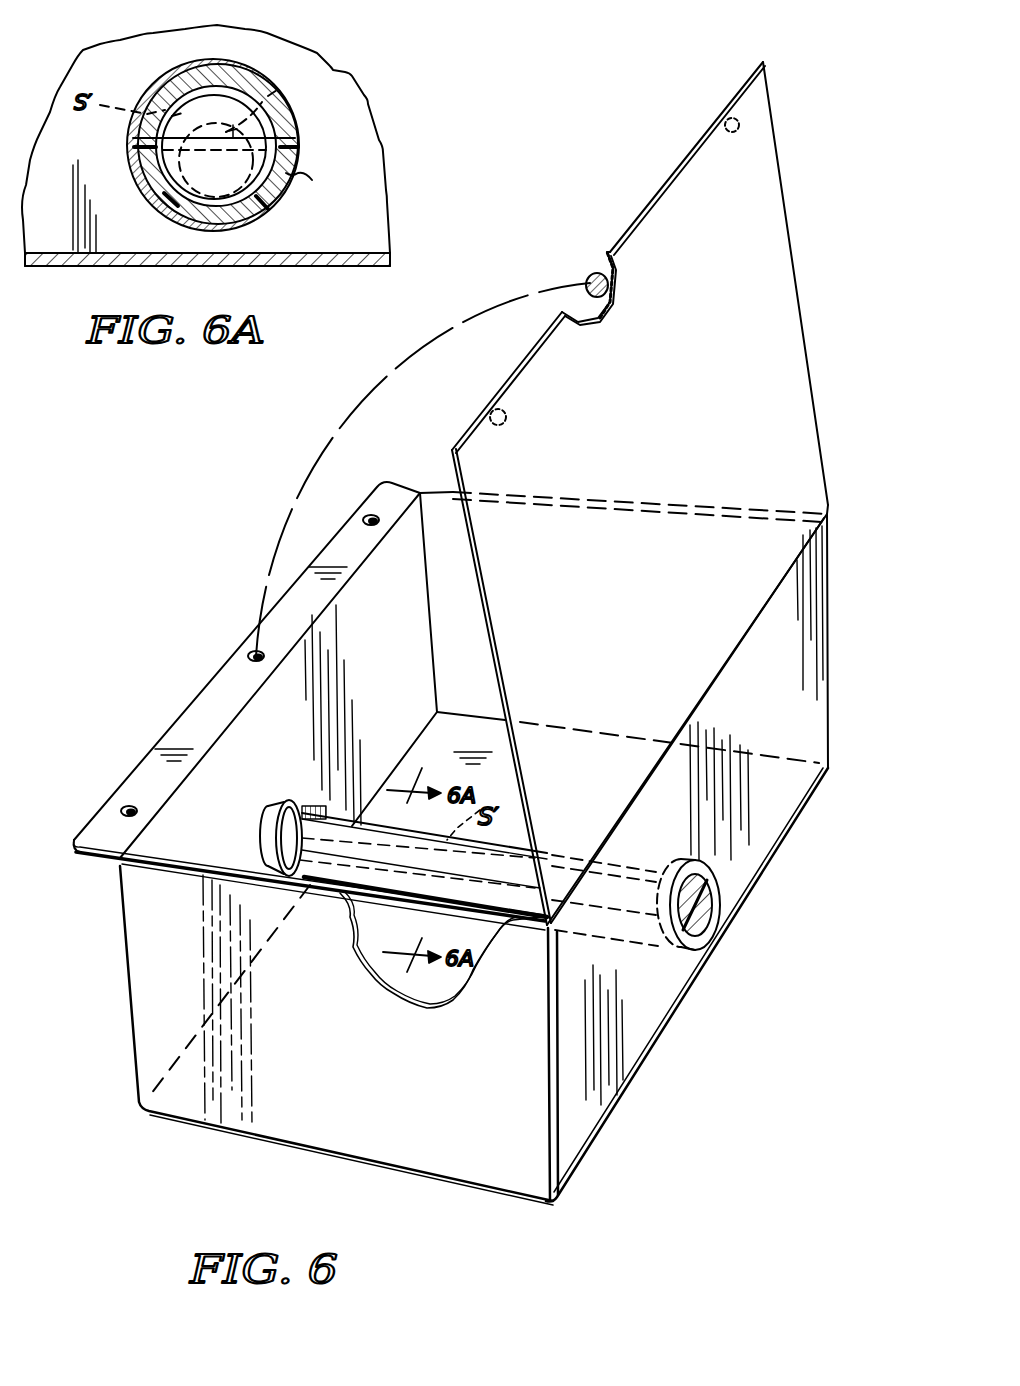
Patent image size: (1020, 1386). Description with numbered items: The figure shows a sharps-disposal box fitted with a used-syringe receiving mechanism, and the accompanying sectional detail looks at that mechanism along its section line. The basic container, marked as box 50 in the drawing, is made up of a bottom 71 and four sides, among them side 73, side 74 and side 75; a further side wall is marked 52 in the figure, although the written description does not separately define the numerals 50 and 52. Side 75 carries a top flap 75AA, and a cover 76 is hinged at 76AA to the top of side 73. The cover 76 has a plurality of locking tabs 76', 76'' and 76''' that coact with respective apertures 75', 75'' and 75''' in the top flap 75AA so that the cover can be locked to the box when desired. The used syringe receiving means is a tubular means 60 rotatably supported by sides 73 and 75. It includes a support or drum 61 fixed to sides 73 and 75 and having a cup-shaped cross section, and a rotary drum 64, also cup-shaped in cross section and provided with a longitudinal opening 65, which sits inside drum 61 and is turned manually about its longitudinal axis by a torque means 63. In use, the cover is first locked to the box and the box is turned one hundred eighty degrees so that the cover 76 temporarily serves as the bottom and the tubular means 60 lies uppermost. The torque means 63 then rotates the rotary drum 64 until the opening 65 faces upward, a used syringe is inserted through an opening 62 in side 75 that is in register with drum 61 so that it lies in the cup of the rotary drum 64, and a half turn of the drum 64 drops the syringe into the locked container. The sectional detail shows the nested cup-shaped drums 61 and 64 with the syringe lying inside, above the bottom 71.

In FIG. 6, the container 50 is at (186, 559).
In FIG. 6, the front wall 52 is at (337, 1127).
In FIG. 6A, the tubular means 60 is at (338, 78).
In FIG. 6, the tubular means 60 is at (735, 872).
In FIG. 6A, the support or drum 61 is at (312, 180).
In FIG. 6, the support or drum 61 is at (350, 818).
In FIG. 6, the opening 62 is at (272, 830).
In FIG. 6A, the torque means 63 is at (286, 100).
In FIG. 6, the torque means 63 is at (703, 920).
In FIG. 6A, the rotary drum 64 is at (170, 117).
In FIG. 6, the rotary drum 64 is at (312, 857).
In FIG. 6A, the longitudinal opening 65 is at (188, 190).
In FIG. 6A, the bottom 71 is at (267, 252).
In FIG. 6, the bottom 71 is at (438, 748).
In FIG. 6, the side 73 is at (575, 1122).
In FIG. 6, the side 74 is at (458, 590).
In FIG. 6, the side 75 is at (309, 706).
In FIG. 6, the aperture 75' is at (92, 793).
In FIG. 6, the aperture 75'' is at (222, 636).
In FIG. 6, the aperture 75''' is at (374, 470).
In FIG. 6, the top flap 75AA is at (97, 866).
In FIG. 6, the cover 76 is at (655, 493).
In FIG. 6, the locking tab 76' is at (541, 418).
In FIG. 6, the locking tab 76'' is at (577, 278).
In FIG. 6, the locking tab 76''' is at (673, 132).
In FIG. 6, the hinge 76AA is at (540, 935).